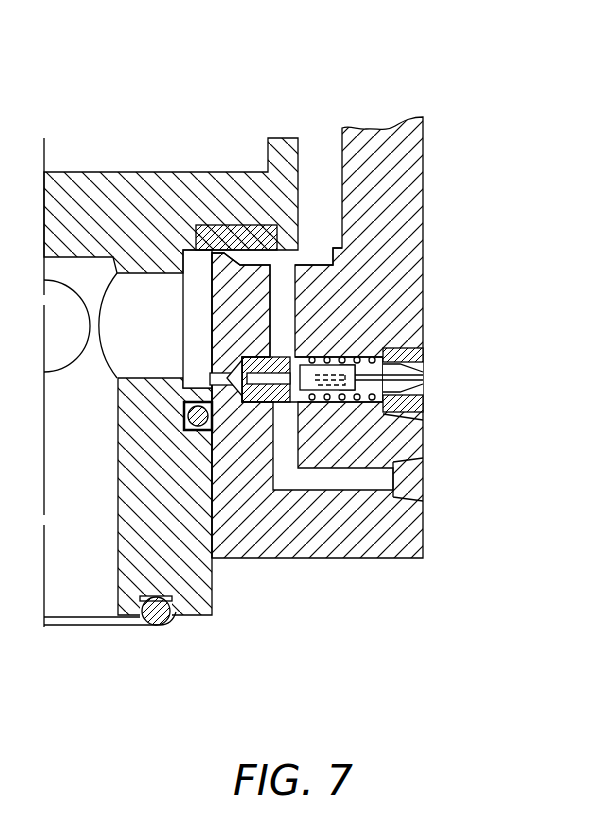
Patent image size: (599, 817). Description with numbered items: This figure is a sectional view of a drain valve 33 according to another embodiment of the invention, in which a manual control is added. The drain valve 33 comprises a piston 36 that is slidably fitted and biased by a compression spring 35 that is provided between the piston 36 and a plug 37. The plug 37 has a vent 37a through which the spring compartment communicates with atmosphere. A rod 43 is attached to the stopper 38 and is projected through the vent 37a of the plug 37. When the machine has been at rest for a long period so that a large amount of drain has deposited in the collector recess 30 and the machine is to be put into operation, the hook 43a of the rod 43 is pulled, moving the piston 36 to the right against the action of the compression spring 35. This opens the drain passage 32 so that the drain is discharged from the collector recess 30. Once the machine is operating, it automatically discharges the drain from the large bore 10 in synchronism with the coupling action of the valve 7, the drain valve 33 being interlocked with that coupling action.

The valve 7 is at (280, 138).
The large bore 10 is at (352, 140).
The collector recess 30 is at (314, 254).
The drain passage 32 is at (278, 465).
The drain valve 33 is at (368, 405).
The compression spring 35 is at (361, 402).
The piston 36 is at (358, 364).
The plug 37 is at (420, 392).
The vent 37a is at (398, 412).
The stopper 38 is at (283, 352).
The rod 43 is at (417, 351).
The hook 43a is at (416, 378).